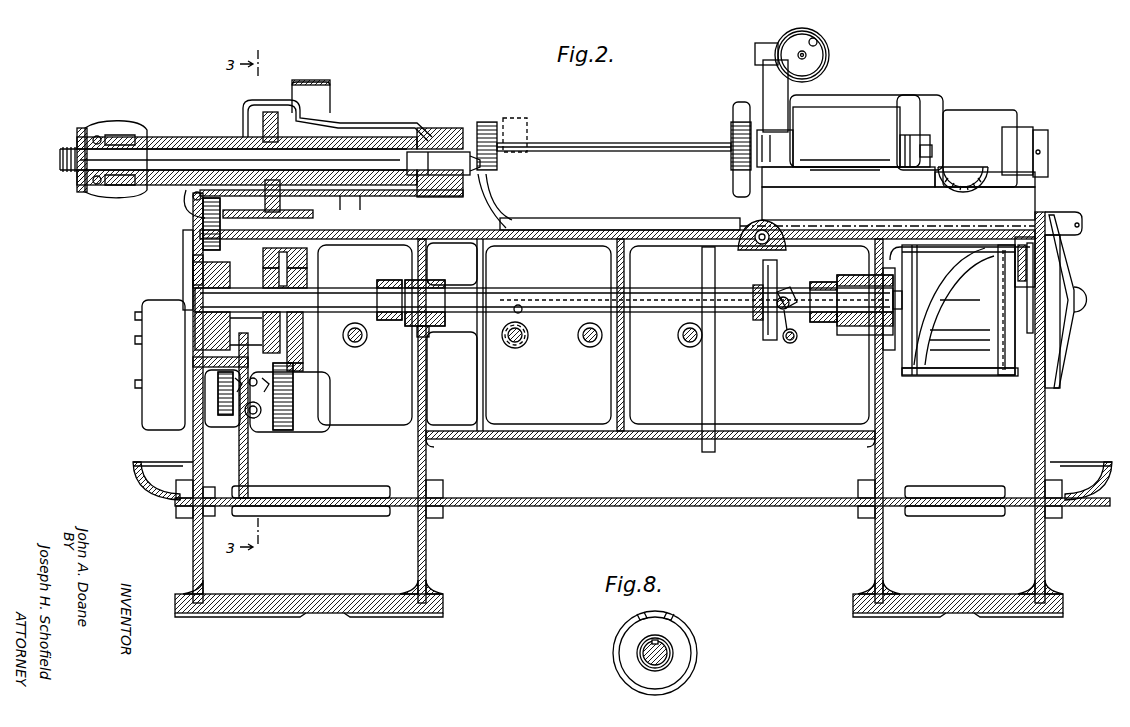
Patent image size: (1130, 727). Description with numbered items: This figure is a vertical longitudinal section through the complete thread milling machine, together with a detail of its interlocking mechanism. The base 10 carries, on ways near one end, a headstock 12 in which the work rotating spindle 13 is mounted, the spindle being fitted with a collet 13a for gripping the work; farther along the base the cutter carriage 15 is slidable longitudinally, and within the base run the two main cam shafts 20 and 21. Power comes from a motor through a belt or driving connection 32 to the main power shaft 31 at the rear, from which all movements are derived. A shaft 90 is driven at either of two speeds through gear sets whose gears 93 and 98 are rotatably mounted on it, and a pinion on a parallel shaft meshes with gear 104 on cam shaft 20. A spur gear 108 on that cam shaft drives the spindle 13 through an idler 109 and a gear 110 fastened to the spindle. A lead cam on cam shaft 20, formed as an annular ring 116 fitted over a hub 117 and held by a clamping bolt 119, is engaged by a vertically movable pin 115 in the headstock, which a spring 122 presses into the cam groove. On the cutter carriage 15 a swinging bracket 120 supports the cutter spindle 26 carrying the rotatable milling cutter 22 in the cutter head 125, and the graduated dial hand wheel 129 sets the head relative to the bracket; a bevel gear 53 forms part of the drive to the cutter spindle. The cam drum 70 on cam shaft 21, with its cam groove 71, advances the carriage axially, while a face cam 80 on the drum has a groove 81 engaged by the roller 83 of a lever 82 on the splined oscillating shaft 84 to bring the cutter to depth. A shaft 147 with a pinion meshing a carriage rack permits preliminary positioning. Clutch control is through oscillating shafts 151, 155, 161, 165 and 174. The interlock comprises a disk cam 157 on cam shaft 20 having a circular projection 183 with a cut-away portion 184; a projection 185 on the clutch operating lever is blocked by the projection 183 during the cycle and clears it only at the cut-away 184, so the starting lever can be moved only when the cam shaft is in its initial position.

In FIG. 2, the base 10 is at (1046, 424).
In FIG. 2, the headstock 12 is at (343, 121).
In FIG. 2, the work rotating spindle 13 is at (442, 128).
In FIG. 2, the collet 13a is at (486, 194).
In FIG. 2, the cutter carriage 15 is at (1033, 208).
In FIG. 2, the main cam shaft 20 is at (648, 288).
In FIG. 8, the main cam shaft 20 is at (642, 665).
In FIG. 2, the main cam shaft 21 is at (1086, 298).
In FIG. 2, the rotatable milling cutter 22 is at (490, 122).
In FIG. 2, the cutter spindle 26 is at (921, 140).
In FIG. 2, the main power shaft 31 is at (623, 143).
In FIG. 2, the driving connection 32 is at (318, 82).
In FIG. 2, the bevel gear 53 is at (969, 182).
In FIG. 2, the cam drum 70 is at (986, 378).
In FIG. 2, the cam groove 71 is at (918, 376).
In FIG. 2, the face cam 80 is at (1006, 378).
In FIG. 2, the cam groove 81 is at (1008, 360).
In FIG. 2, the lever 82 is at (1035, 253).
In FIG. 2, the roller 83 is at (1003, 299).
In FIG. 2, the oscillating shaft 84 is at (1082, 222).
In FIG. 2, the shaft 90 is at (305, 380).
In FIG. 2, the gear 93 is at (228, 438).
In FIG. 2, the gear 98 is at (285, 438).
In FIG. 2, the gear 104 is at (310, 262).
In FIG. 2, the spur gear 108 is at (308, 276).
In FIG. 2, the idler 109 is at (262, 236).
In FIG. 2, the gear 110 is at (282, 198).
In FIG. 2, the pin 115 is at (200, 237).
In FIG. 2, the annular ring 116 is at (190, 262).
In FIG. 2, the hub 117 is at (188, 278).
In FIG. 2, the clamping bolt 119 is at (195, 335).
In FIG. 2, the swinging bracket 120 is at (766, 88).
In FIG. 2, the spring 122 is at (190, 213).
In FIG. 2, the cutter head 125 is at (835, 160).
In FIG. 2, the graduated dial hand wheel 129 is at (831, 56).
In FIG. 2, the shaft 147 is at (748, 250).
In FIG. 2, the oscillating shaft 151 is at (518, 348).
In FIG. 2, the oscillating shaft 155 is at (795, 344).
In FIG. 2, the disk cam 157 is at (765, 342).
In FIG. 8, the disk cam 157 is at (675, 648).
In FIG. 2, the oscillatory shaft 161 is at (591, 347).
In FIG. 2, the shaft 165 is at (359, 345).
In FIG. 2, the oscillating shaft 174 is at (684, 345).
In FIG. 8, the circular projection 183 is at (616, 636).
In FIG. 8, the cut-away portion 184 is at (658, 614).
In FIG. 2, the projection 185 is at (789, 289).